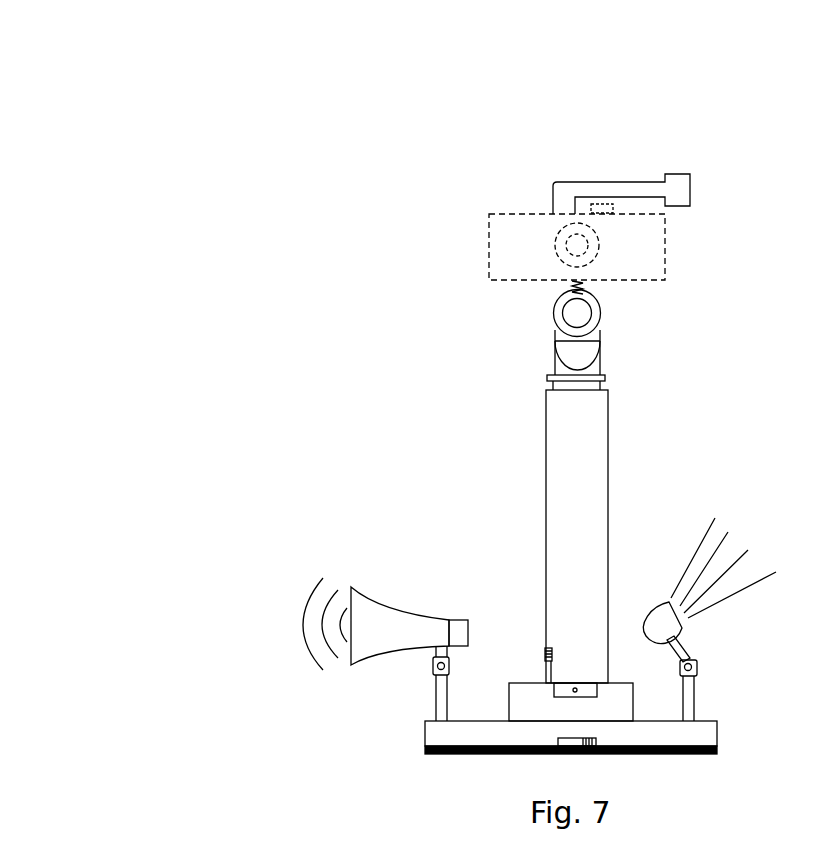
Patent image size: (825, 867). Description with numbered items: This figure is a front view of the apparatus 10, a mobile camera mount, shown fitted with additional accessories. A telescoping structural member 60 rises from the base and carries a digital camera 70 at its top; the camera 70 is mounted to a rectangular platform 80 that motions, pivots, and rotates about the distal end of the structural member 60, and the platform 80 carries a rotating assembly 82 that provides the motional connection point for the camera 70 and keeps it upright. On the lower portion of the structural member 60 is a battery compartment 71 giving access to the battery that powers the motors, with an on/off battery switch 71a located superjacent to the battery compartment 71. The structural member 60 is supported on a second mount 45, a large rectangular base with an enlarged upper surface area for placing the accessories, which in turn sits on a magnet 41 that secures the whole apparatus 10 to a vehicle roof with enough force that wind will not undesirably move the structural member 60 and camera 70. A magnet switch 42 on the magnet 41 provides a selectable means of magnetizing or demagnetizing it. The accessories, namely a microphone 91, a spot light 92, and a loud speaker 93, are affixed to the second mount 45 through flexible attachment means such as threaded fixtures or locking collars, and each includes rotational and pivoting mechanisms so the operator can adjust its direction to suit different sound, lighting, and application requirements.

The apparatus 10 is at (116, 120).
The magnet 41 is at (694, 753).
The magnet switch 42 is at (594, 740).
The second mount 45 is at (487, 735).
The structural member 60 is at (536, 459).
The camera 70 is at (489, 216).
The battery compartment 71 is at (576, 688).
The battery switch 71a is at (546, 650).
The platform 80 is at (605, 381).
The rotating assembly 82 is at (616, 329).
The microphone 91 is at (681, 194).
The spot light 92 is at (661, 623).
The loud speaker 93 is at (457, 633).